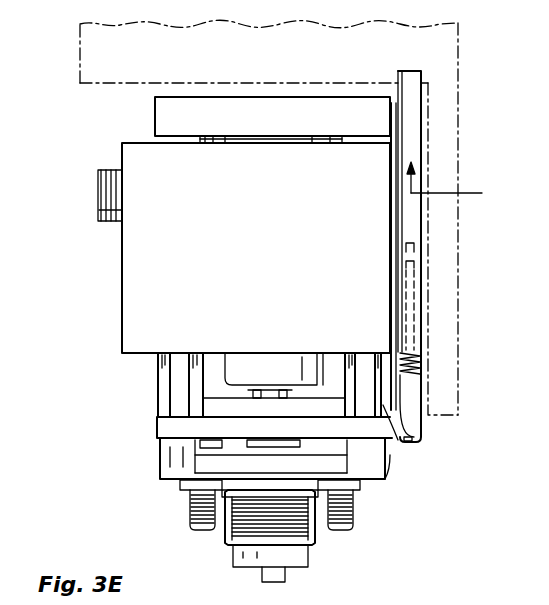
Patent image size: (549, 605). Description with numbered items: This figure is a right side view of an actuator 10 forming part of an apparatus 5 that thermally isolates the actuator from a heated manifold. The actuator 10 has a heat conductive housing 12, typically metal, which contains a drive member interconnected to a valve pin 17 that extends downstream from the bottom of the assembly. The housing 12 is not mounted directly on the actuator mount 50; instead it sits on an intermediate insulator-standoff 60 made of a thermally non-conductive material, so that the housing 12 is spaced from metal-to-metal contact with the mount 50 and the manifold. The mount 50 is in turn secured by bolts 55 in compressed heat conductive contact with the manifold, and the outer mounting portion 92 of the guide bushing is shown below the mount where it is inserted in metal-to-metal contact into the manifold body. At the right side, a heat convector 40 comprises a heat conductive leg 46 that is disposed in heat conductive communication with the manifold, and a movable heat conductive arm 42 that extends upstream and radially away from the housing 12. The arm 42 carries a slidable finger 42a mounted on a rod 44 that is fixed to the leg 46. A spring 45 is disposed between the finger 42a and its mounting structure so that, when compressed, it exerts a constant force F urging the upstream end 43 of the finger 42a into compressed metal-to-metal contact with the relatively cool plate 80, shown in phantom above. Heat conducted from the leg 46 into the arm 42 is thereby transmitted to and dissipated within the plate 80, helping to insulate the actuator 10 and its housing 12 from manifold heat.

The apparatus 5 is at (58, 95).
The actuator 10 is at (117, 153).
The heat conductive housing 12 is at (122, 250).
The valve pin 17 is at (288, 576).
The heat convector 40 is at (368, 447).
The heat conductive arm 42 is at (422, 128).
The finger 42a is at (422, 183).
The upstream end 43 is at (402, 71).
The rod 44 is at (413, 304).
The spring 45 is at (422, 364).
The heat conductive leg 46 is at (167, 425).
The actuator mount 50 is at (157, 463).
The bolts 55 is at (190, 512).
The insulator-standoff 60 is at (158, 402).
The cool plate 80 is at (459, 45).
The outer mounting portion of the guide bushing 92 is at (318, 535).
The constant force F is at (451, 188).